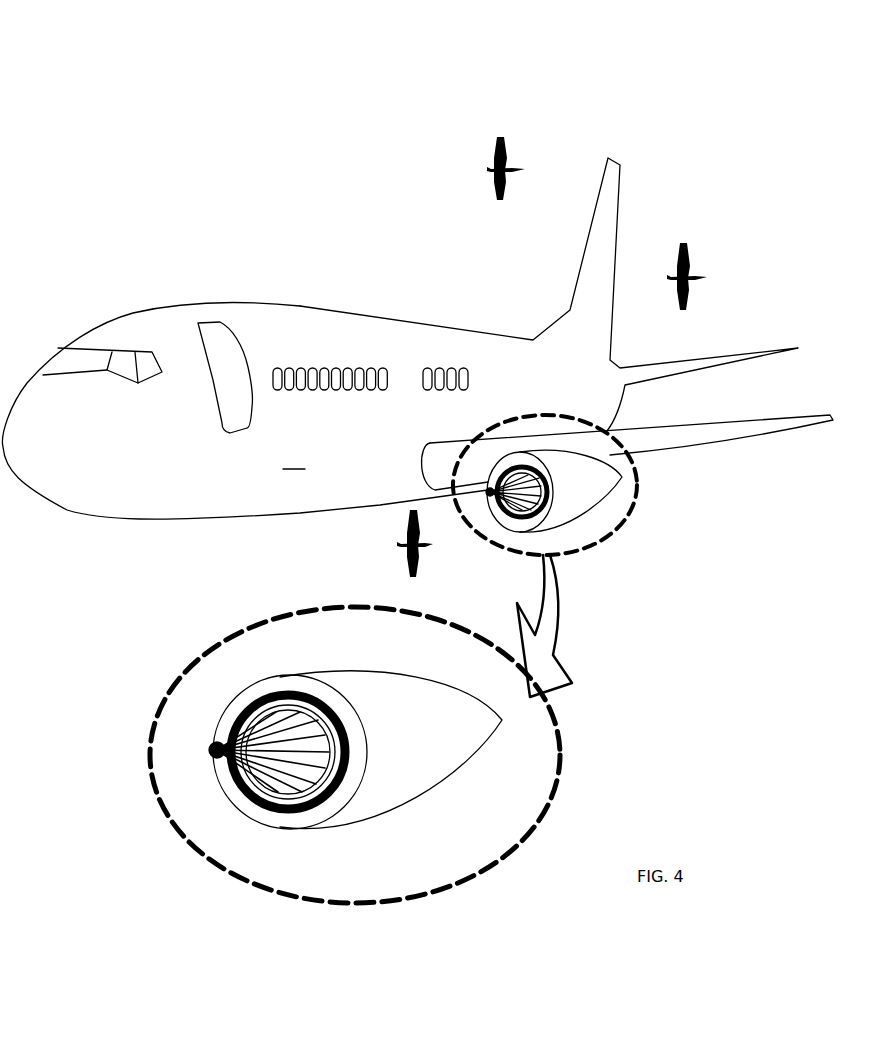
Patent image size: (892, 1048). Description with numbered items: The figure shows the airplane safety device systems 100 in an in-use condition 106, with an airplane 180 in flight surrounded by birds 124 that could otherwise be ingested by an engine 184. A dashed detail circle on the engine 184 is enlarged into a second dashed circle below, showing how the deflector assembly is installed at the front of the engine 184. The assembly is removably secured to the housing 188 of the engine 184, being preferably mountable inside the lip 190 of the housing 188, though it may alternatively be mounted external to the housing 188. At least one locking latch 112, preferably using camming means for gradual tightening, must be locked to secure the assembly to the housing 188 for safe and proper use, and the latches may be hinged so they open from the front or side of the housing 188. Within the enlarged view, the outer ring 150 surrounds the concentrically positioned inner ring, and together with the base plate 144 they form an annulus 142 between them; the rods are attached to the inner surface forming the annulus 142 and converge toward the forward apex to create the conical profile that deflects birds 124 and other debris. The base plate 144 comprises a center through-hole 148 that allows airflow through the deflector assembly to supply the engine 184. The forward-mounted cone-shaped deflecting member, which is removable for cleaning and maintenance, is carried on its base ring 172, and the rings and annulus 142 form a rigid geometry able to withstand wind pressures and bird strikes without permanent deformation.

The airplane safety device system 100 is at (606, 83).
The in-use condition 106 is at (631, 133).
The birds 124 is at (498, 133).
The airplane 180 is at (403, 318).
The engine 184 is at (583, 510).
The housing 188 is at (587, 485).
The lip 190 is at (543, 462).
The locking latch 112 is at (356, 752).
The outer ring 150 is at (308, 692).
The annulus 142 is at (270, 694).
The base plate 144 is at (300, 690).
The through-hole 148 is at (330, 800).
The base ring 172 is at (272, 803).